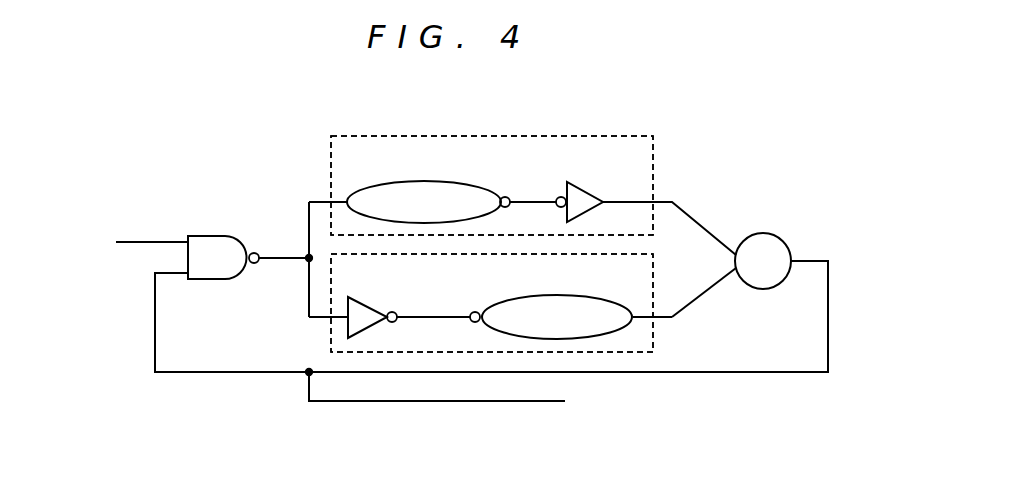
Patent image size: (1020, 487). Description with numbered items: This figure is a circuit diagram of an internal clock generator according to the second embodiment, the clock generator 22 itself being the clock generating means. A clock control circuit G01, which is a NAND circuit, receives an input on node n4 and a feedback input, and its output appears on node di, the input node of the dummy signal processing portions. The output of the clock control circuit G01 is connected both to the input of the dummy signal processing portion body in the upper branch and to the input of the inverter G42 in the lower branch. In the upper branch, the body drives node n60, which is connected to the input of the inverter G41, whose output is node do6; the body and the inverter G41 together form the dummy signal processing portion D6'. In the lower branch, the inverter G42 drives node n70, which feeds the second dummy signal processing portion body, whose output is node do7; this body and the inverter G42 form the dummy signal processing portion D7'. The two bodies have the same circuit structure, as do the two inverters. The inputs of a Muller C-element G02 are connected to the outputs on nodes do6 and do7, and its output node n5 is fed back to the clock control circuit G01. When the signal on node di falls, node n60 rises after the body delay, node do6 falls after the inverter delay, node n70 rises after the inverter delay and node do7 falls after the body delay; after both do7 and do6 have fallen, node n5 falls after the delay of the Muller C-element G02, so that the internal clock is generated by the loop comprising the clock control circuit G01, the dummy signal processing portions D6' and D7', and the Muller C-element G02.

The clock generator 22 is at (674, 106).
The node n4 is at (152, 240).
The clock control circuit G01 is at (208, 233).
The node of the input of the dummy signal processing portion di is at (305, 262).
The node n60 is at (528, 198).
The inverter G41 is at (583, 190).
The dummy signal processing portion D6' is at (532, 185).
The node of the output of the dummy signal processing portion do6 is at (692, 221).
The Muller C-element G02 is at (791, 246).
The node of the output of the dummy signal processing portion do7 is at (712, 292).
The dummy signal processing portion D7' is at (532, 304).
The node n70 is at (455, 303).
The inverter G42 is at (373, 291).
The node n5 is at (532, 403).